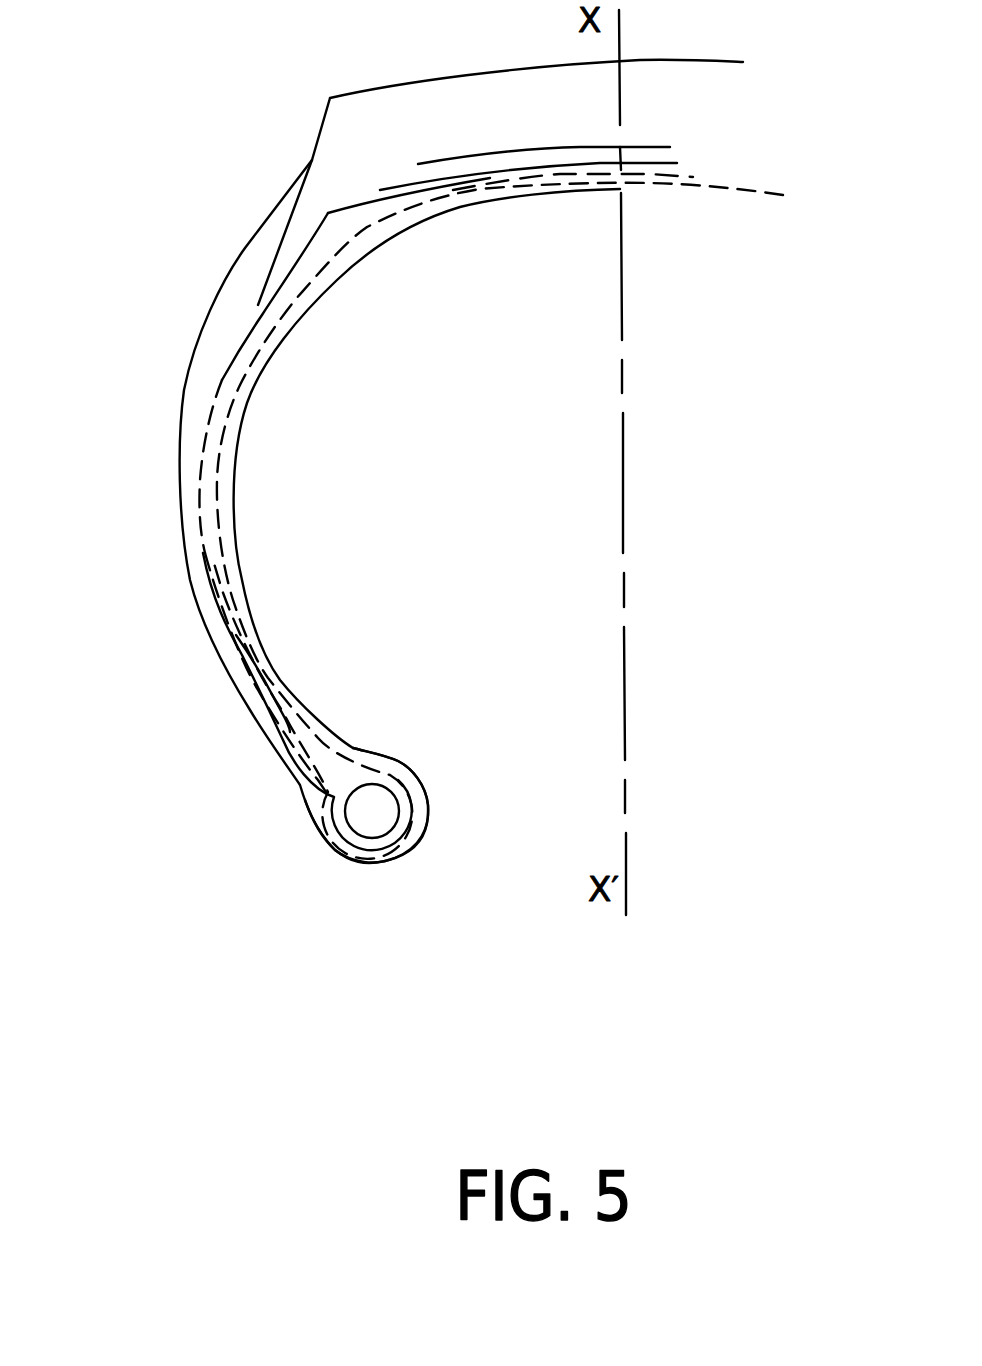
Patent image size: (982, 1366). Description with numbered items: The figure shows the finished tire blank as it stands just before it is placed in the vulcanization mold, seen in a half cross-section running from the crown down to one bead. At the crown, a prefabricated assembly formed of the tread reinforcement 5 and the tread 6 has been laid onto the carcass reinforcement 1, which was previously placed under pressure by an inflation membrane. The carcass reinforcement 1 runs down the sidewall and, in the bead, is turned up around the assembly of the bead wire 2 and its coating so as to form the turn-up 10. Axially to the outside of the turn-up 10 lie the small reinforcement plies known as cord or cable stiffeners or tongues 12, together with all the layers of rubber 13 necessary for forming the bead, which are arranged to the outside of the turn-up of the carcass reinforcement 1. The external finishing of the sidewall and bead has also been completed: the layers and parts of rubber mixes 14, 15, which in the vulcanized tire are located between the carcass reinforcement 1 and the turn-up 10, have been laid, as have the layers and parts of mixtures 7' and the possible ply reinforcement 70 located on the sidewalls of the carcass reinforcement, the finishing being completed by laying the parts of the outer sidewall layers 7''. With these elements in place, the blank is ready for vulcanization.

The carcass reinforcement 1 is at (236, 602).
The bead wire 2 is at (373, 820).
The tread reinforcement 5 is at (658, 157).
The tread 6 is at (455, 90).
The layers and parts of mixtures 7' is at (498, 521).
The outer sidewall layers 7'' is at (191, 383).
The turn-up 10 is at (283, 743).
The cord or cable stiffeners or tongues 12 is at (327, 833).
The layers of rubber 13 is at (420, 833).
The layers and parts of rubber mixes 14 is at (343, 767).
The layers and parts of rubber mixes 15 is at (250, 678).
The ply reinforcement 70 is at (207, 553).